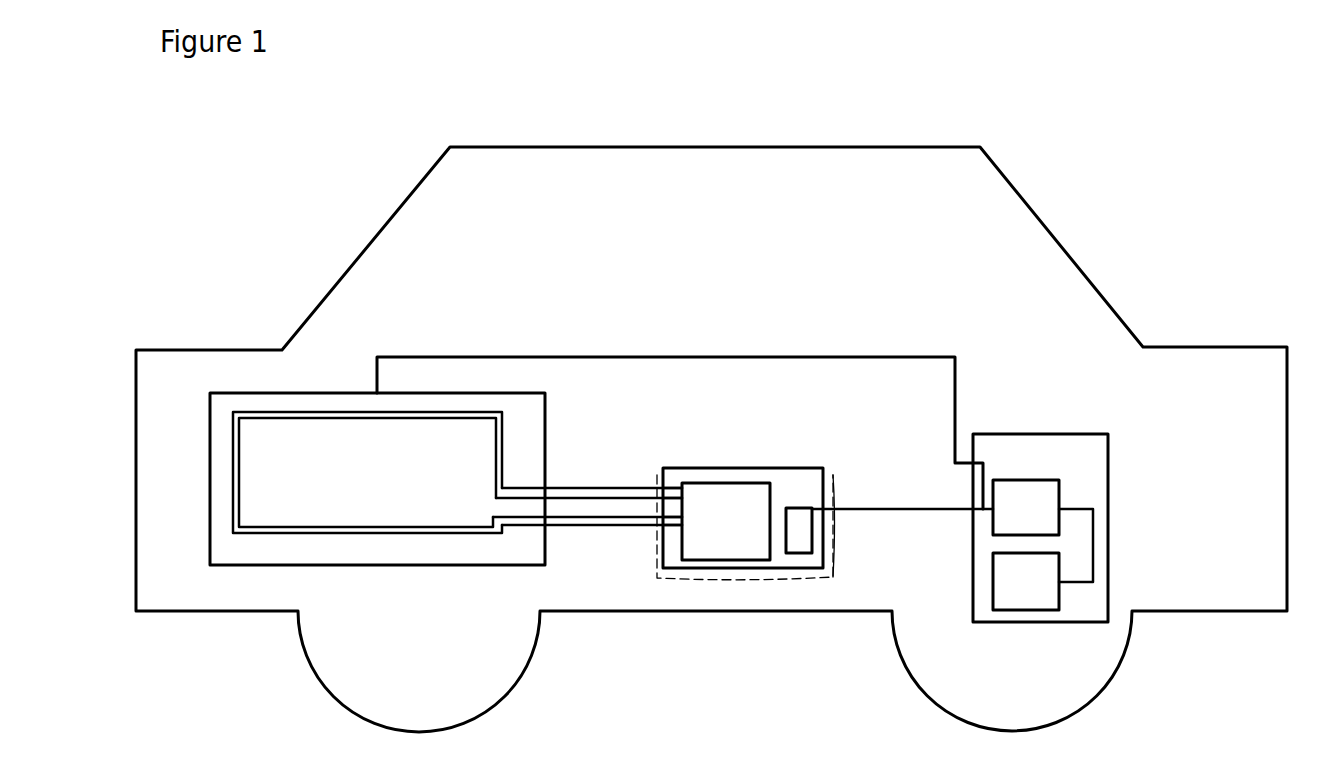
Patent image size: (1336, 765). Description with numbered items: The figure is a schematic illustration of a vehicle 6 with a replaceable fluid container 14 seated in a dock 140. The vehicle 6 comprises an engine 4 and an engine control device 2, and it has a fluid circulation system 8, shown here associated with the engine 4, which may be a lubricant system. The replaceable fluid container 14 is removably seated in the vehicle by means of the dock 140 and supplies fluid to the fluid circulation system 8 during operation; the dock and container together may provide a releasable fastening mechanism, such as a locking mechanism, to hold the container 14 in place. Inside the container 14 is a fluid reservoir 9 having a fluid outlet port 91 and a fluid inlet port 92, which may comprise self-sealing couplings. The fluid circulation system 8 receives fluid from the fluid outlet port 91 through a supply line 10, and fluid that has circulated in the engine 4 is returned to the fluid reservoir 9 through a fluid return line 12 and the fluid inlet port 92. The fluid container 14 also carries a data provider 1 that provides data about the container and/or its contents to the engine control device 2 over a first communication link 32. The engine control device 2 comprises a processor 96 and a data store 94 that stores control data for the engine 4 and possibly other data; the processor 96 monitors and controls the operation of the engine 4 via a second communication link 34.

The vehicle 6 is at (749, 146).
The second communication link 34 is at (862, 356).
The engine 4 is at (377, 479).
The fluid circulation system 8 is at (372, 527).
The fluid return line 12 is at (541, 490).
The supply line 10 is at (528, 521).
The replaceable fluid container 14 is at (743, 518).
The fluid reservoir 9 is at (726, 521).
The data provider 1 is at (799, 530).
The fluid inlet port 92 is at (680, 488).
The fluid outlet port 91 is at (664, 556).
The first communication link 32 is at (905, 510).
The engine control device 2 is at (1040, 528).
The processor 96 is at (1026, 507).
The data store 94 is at (1026, 581).
The dock 140 is at (755, 578).